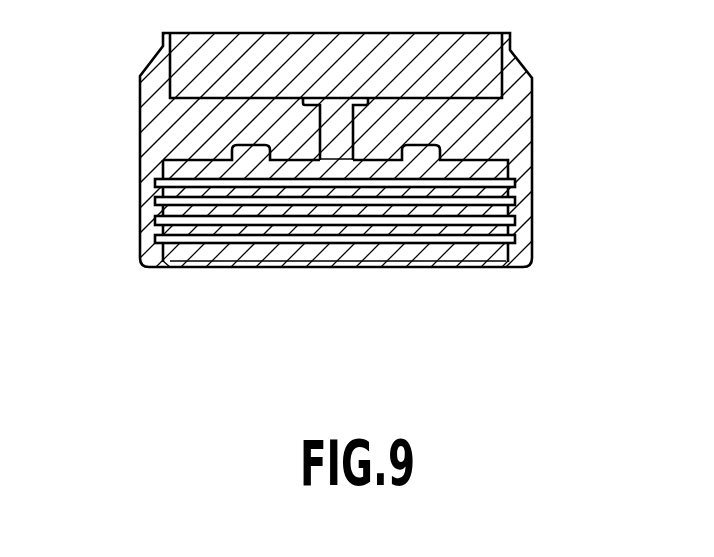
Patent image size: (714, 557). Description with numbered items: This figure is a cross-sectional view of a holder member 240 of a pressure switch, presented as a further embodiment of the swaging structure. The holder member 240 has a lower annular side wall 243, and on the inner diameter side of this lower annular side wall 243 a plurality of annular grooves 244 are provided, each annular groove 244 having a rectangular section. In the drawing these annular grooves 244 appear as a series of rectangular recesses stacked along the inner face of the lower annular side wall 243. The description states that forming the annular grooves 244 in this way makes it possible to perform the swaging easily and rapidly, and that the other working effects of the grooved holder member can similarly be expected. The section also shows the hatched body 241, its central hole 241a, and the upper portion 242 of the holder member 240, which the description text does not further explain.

The holder member 240 is at (540, 79).
The cap body 241 is at (223, 117).
The through hole 241a is at (337, 137).
The top plate / flange 242 is at (155, 77).
The lower annular side wall 243 is at (157, 243).
The annular grooves 244 is at (166, 250).